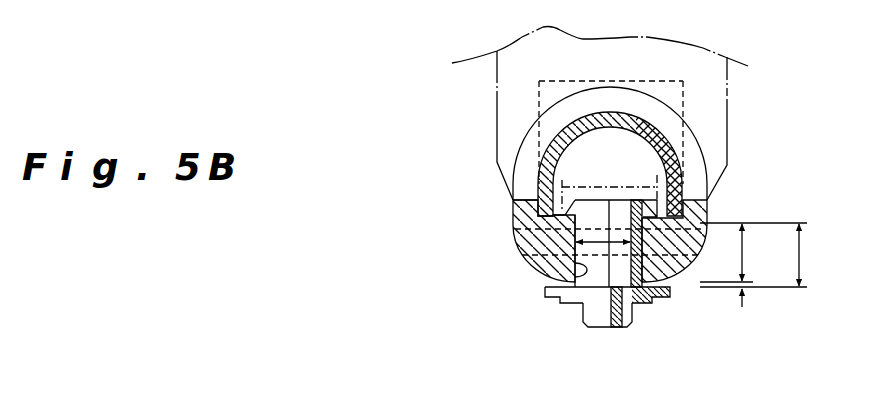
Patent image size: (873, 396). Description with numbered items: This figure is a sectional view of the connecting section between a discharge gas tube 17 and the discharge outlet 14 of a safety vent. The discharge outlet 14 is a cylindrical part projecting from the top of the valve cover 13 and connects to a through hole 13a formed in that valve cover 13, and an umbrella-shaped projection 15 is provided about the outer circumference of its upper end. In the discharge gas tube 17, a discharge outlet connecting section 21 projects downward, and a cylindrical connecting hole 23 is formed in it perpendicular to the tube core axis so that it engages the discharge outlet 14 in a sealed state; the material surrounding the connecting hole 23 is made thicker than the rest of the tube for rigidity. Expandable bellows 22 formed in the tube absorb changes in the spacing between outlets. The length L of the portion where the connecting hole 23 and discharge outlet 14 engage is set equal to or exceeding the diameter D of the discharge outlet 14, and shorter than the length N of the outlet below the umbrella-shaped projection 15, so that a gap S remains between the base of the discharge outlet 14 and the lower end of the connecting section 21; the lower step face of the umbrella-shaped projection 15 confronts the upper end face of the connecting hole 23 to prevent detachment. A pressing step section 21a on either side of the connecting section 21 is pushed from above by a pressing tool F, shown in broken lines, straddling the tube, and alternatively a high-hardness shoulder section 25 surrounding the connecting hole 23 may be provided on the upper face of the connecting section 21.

The pressing tool F is at (496, 93).
The expandable bellows 22 is at (522, 146).
The discharge outlet connecting section 21 is at (542, 249).
The pressing step section 21a is at (537, 198).
The discharge gas tube 17 is at (653, 140).
The shoulder section 25 is at (672, 167).
The umbrella-shaped projection 15 is at (660, 202).
The discharge outlet 14 is at (596, 268).
The connecting hole 23 is at (574, 273).
The valve cover 13 is at (672, 297).
The through hole 13a is at (616, 328).
The diameter of the discharge outlet D is at (622, 212).
The length of the engaging portion L is at (753, 252).
The length of the lower portion of the discharge outlet N is at (811, 255).
The gap S is at (748, 290).